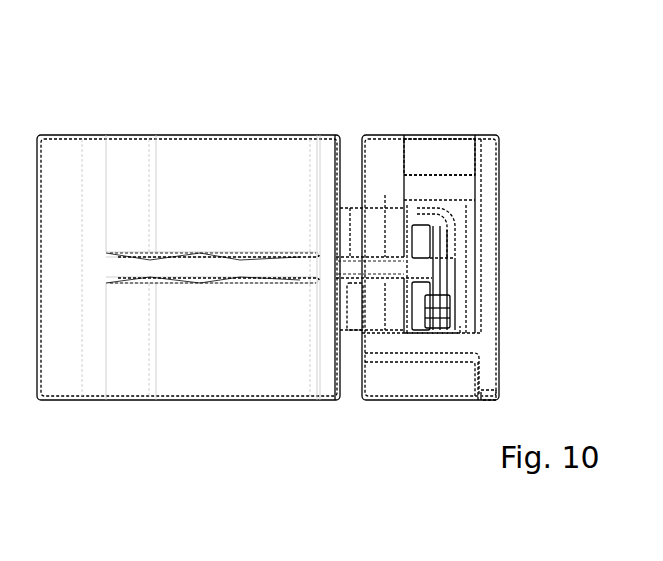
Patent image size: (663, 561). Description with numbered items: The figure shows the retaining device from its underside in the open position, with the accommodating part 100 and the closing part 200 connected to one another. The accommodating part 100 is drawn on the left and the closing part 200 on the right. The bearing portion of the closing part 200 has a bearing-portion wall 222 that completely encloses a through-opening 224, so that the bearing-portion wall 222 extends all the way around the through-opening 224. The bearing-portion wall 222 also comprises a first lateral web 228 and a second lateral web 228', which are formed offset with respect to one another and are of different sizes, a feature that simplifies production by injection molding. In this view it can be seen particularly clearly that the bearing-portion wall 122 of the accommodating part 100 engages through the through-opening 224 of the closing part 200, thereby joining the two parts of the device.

The accommodating part 100 is at (188, 343).
The bearing-portion wall 122 is at (320, 152).
The closing part 200 is at (489, 257).
The bearing-portion wall 222 is at (495, 267).
The through-opening 224 is at (481, 190).
The first lateral web 228 is at (422, 441).
The second lateral web 228' is at (445, 96).